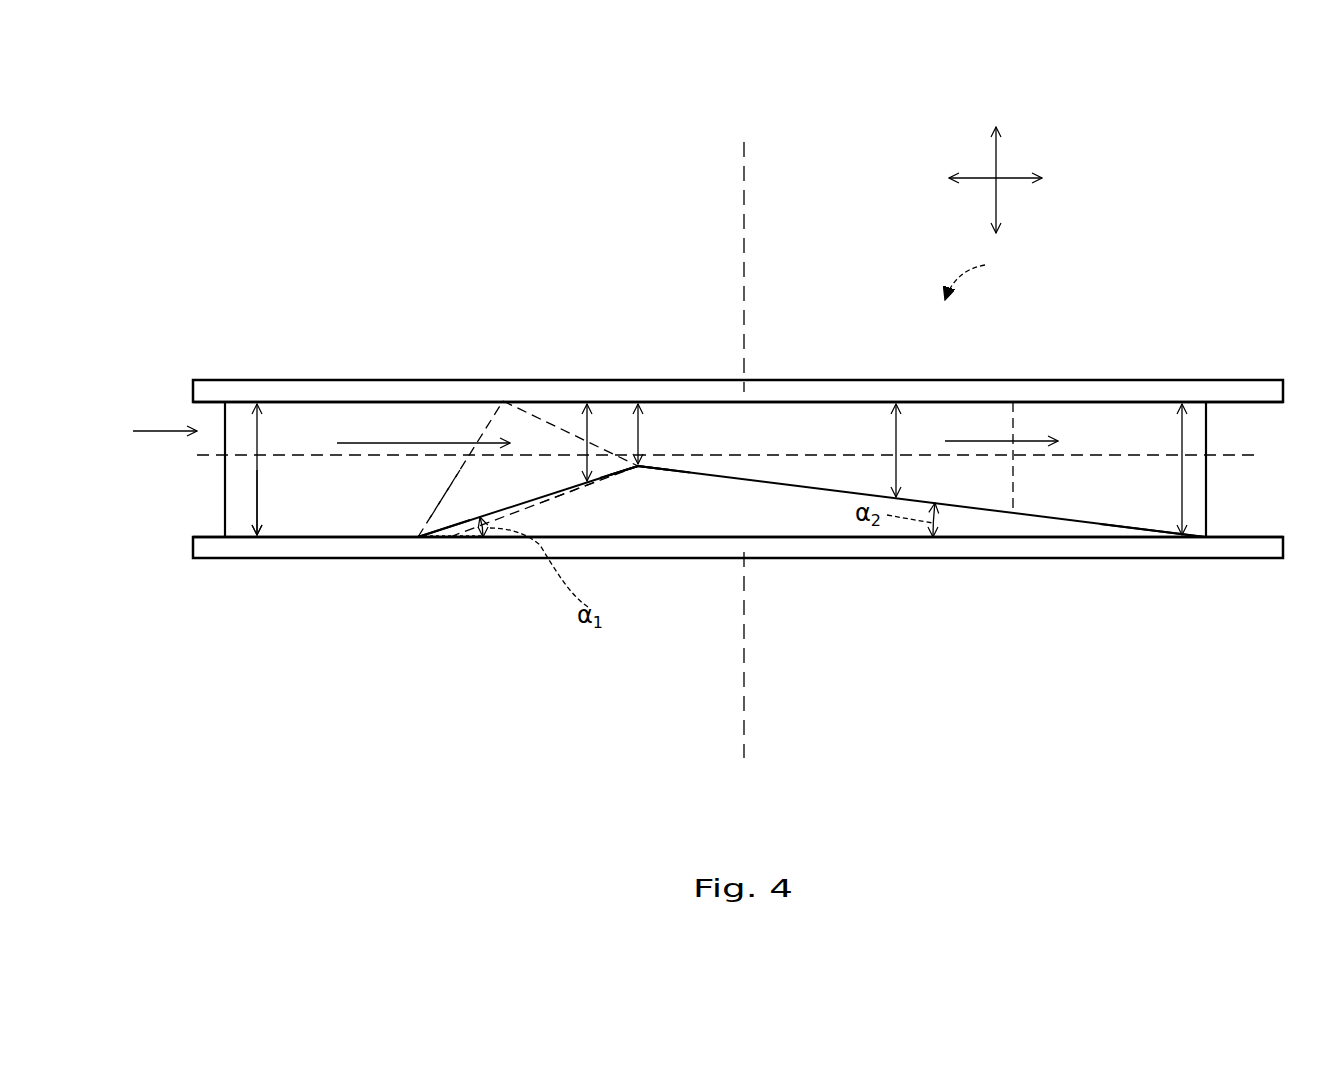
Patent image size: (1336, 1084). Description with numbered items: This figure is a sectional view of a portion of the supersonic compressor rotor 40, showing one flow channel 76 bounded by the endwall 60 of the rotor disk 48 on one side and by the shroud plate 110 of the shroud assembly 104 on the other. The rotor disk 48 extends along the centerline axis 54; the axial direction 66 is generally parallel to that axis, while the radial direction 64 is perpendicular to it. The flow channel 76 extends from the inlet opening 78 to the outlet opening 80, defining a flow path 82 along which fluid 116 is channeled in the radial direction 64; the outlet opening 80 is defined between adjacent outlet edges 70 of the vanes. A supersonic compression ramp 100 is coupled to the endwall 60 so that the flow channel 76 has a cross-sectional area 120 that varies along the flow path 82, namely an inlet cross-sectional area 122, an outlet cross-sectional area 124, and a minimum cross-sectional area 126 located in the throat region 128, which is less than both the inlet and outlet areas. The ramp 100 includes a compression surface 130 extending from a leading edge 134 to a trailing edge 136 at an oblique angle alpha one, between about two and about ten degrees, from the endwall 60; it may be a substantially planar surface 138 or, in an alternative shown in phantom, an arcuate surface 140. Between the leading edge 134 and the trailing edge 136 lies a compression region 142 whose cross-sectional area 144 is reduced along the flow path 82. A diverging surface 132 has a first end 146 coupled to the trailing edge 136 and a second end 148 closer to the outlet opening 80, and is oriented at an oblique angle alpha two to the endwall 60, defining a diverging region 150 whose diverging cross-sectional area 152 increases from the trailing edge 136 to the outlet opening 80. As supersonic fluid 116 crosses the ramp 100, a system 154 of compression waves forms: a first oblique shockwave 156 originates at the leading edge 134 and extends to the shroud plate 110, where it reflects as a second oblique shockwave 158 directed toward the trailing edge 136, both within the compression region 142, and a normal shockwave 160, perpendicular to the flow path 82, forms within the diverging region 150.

The supersonic compressor rotor 40 is at (412, 157).
The rotor disk 48 is at (1135, 593).
The centerline axis 54 is at (748, 190).
The endwall 60 is at (975, 548).
The radial direction 64 is at (1010, 178).
The axial direction 66 is at (997, 157).
The outlet edge 70 is at (1208, 480).
The flow channel 76 is at (157, 428).
The inlet opening 78 is at (113, 547).
The outlet opening 80 is at (1253, 417).
The flow path 82 is at (1233, 450).
The supersonic compression ramp 100 is at (790, 520).
The shroud assembly 104 is at (987, 274).
The shroud plate 110 is at (853, 401).
The fluid 116 is at (420, 442).
The cross-sectional area 120 is at (258, 430).
The inlet cross-sectional area 122 is at (258, 515).
The outlet cross-sectional area 124 is at (1180, 425).
The minimum cross-sectional area 126 is at (662, 402).
The throat region 128 is at (700, 417).
The compression surface 130 is at (528, 502).
The diverging surface 132 is at (1040, 515).
The leading edge 134 is at (437, 545).
The trailing edge 136 is at (645, 470).
The substantially planar surface 138 is at (565, 492).
The arcuate surface 140 is at (560, 512).
The compression region 142 is at (385, 413).
The cross-sectional area 144 is at (568, 395).
The first end 146 is at (640, 466).
The second end 148 is at (1152, 530).
The diverging region 150 is at (973, 418).
The diverging cross-sectional area 152 is at (897, 425).
The system of compression waves 154 is at (467, 400).
The first oblique shockwave 156 is at (445, 482).
The second oblique shockwave 158 is at (520, 395).
The normal shockwave 160 is at (1018, 425).